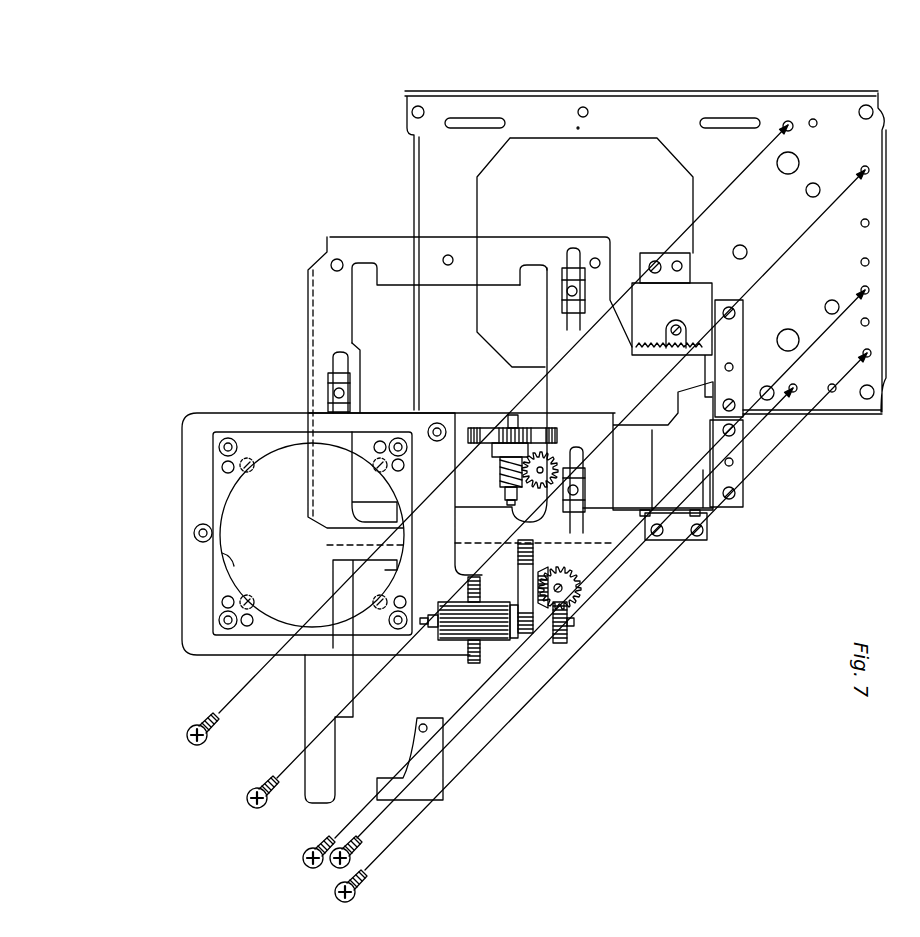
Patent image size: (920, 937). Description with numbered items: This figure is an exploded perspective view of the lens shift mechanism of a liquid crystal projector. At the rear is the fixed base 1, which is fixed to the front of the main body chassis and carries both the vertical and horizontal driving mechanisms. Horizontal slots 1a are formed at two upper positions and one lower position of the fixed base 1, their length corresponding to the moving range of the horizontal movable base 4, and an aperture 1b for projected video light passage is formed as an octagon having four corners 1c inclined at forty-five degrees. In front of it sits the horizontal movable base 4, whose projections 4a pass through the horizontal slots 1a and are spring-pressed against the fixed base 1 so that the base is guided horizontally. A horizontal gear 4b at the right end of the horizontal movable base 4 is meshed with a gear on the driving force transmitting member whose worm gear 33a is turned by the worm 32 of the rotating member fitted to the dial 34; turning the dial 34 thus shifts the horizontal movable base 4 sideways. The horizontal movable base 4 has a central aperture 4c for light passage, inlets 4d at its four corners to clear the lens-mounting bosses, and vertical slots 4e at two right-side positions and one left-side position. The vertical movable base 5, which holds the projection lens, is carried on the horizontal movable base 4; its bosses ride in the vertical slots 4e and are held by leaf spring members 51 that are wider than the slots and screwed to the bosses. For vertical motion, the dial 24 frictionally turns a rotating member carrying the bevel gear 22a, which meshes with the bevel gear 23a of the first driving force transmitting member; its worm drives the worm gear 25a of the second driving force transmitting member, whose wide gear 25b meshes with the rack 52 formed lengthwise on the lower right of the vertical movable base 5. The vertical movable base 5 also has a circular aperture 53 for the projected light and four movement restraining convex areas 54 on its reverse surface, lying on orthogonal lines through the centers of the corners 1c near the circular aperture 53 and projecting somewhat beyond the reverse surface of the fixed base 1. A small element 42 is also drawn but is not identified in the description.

The fixed base 1 is at (800, 82).
The horizontal slot 1a is at (458, 128).
The aperture for projected video light passage 1b is at (575, 128).
The corner inclined at an angle of 45 degrees 1c is at (525, 135).
The horizontal movable base 4 is at (295, 281).
The projection 4a is at (331, 256).
The horizontal gear 4b is at (650, 345).
The aperture for projected video light passage 4c is at (412, 285).
The inlet 4d is at (356, 262).
The vertical slot 4e is at (573, 248).
The vertical movable base 5 is at (160, 476).
The bevel gear 22a is at (548, 580).
The bevel gear 23a is at (572, 592).
The dial 24 is at (520, 558).
The worm gear 25a is at (563, 645).
The gear 25b is at (440, 636).
The worm 32 is at (500, 478).
The worm gear 33a is at (545, 466).
The dial 34 is at (480, 430).
The hole 42 is at (595, 258).
The leaf spring member 51 is at (585, 292).
The rack 52 is at (481, 592).
The circular aperture 53 is at (234, 563).
The movement restraining convex area 54 is at (375, 598).